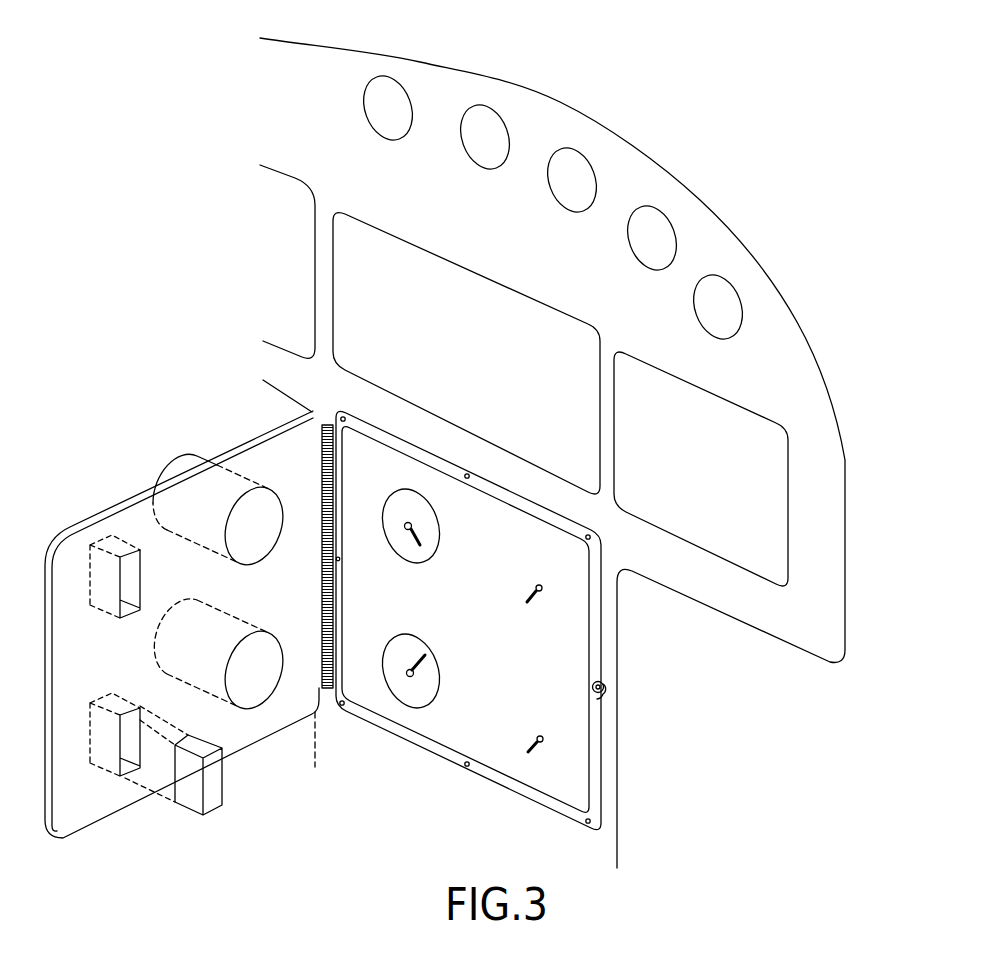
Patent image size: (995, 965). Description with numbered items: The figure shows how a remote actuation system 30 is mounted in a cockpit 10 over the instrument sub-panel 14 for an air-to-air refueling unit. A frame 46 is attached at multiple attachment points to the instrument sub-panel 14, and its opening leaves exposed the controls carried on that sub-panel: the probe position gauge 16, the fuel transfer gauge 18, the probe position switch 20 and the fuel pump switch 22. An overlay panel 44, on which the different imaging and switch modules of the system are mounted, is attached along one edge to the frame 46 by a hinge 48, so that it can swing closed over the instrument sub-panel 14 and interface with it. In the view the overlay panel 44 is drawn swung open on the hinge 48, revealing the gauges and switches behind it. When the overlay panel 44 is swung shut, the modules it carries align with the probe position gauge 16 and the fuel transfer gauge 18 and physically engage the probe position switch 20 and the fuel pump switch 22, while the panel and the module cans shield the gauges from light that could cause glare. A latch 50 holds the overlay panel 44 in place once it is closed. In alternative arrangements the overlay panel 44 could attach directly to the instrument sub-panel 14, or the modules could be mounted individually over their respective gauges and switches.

The cockpit 10 is at (760, 90).
The instrument sub-panel 14 is at (499, 606).
The probe position gauge 16 is at (393, 517).
The fuel transfer gauge 18 is at (393, 667).
The probe position switch 20 is at (542, 590).
The fuel pump switch 22 is at (548, 745).
The remote actuation system 30 is at (182, 624).
The overlay panel 44 is at (102, 822).
The frame 46 is at (500, 783).
The hinge 48 is at (314, 409).
The latch 50 is at (606, 684).